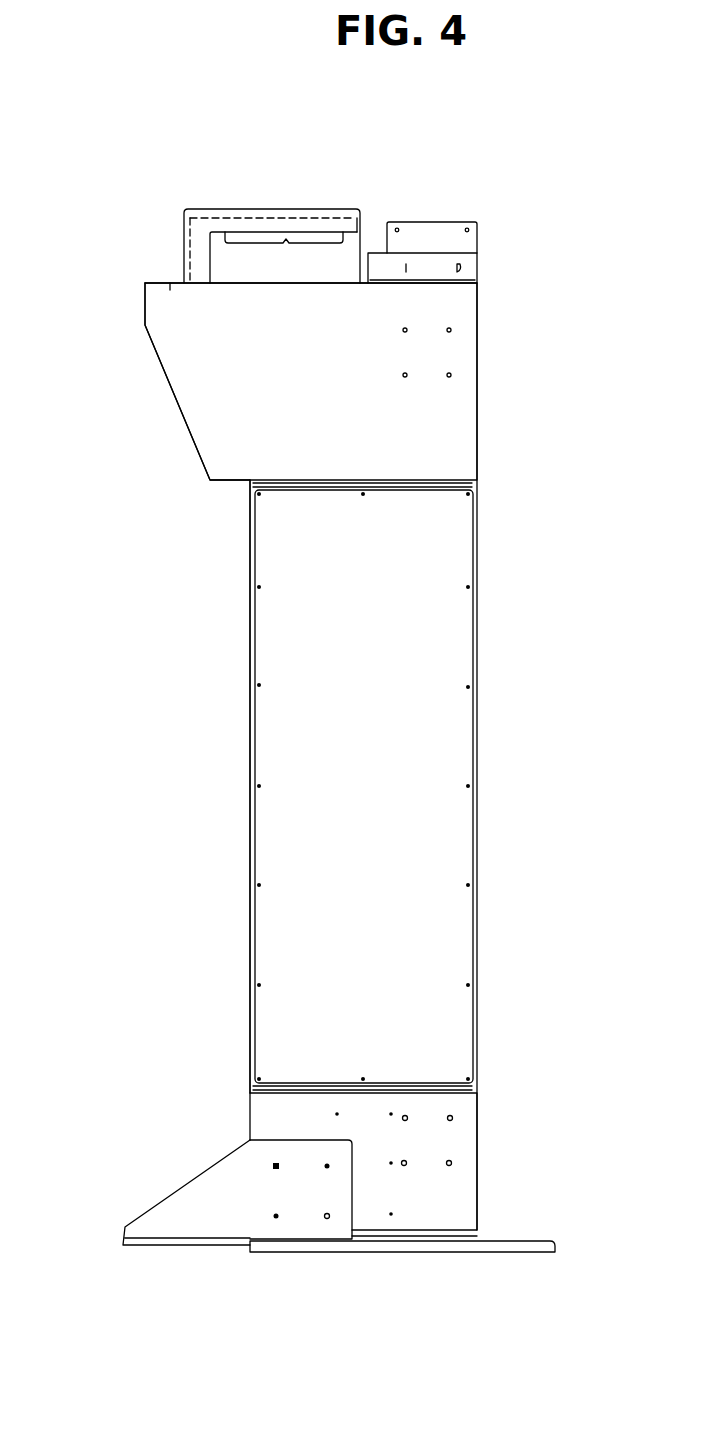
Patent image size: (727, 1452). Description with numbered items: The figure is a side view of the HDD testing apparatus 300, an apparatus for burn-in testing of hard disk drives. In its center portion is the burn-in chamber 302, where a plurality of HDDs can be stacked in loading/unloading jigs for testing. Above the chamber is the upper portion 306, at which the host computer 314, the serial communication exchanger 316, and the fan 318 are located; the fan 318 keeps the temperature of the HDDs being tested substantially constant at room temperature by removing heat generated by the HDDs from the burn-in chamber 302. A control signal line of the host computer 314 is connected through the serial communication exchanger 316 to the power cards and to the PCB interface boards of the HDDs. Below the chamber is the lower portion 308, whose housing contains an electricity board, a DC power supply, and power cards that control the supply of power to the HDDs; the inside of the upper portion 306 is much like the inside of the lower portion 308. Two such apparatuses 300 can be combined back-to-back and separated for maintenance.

The HDD testing apparatus 300 is at (150, 1300).
The burn-in chamber 302 is at (460, 788).
The upper portion 306 is at (460, 409).
The lower portion 308 is at (460, 1158).
The host computer 314 is at (217, 222).
The serial communication exchanger 316 is at (323, 250).
The fan 318 is at (434, 230).